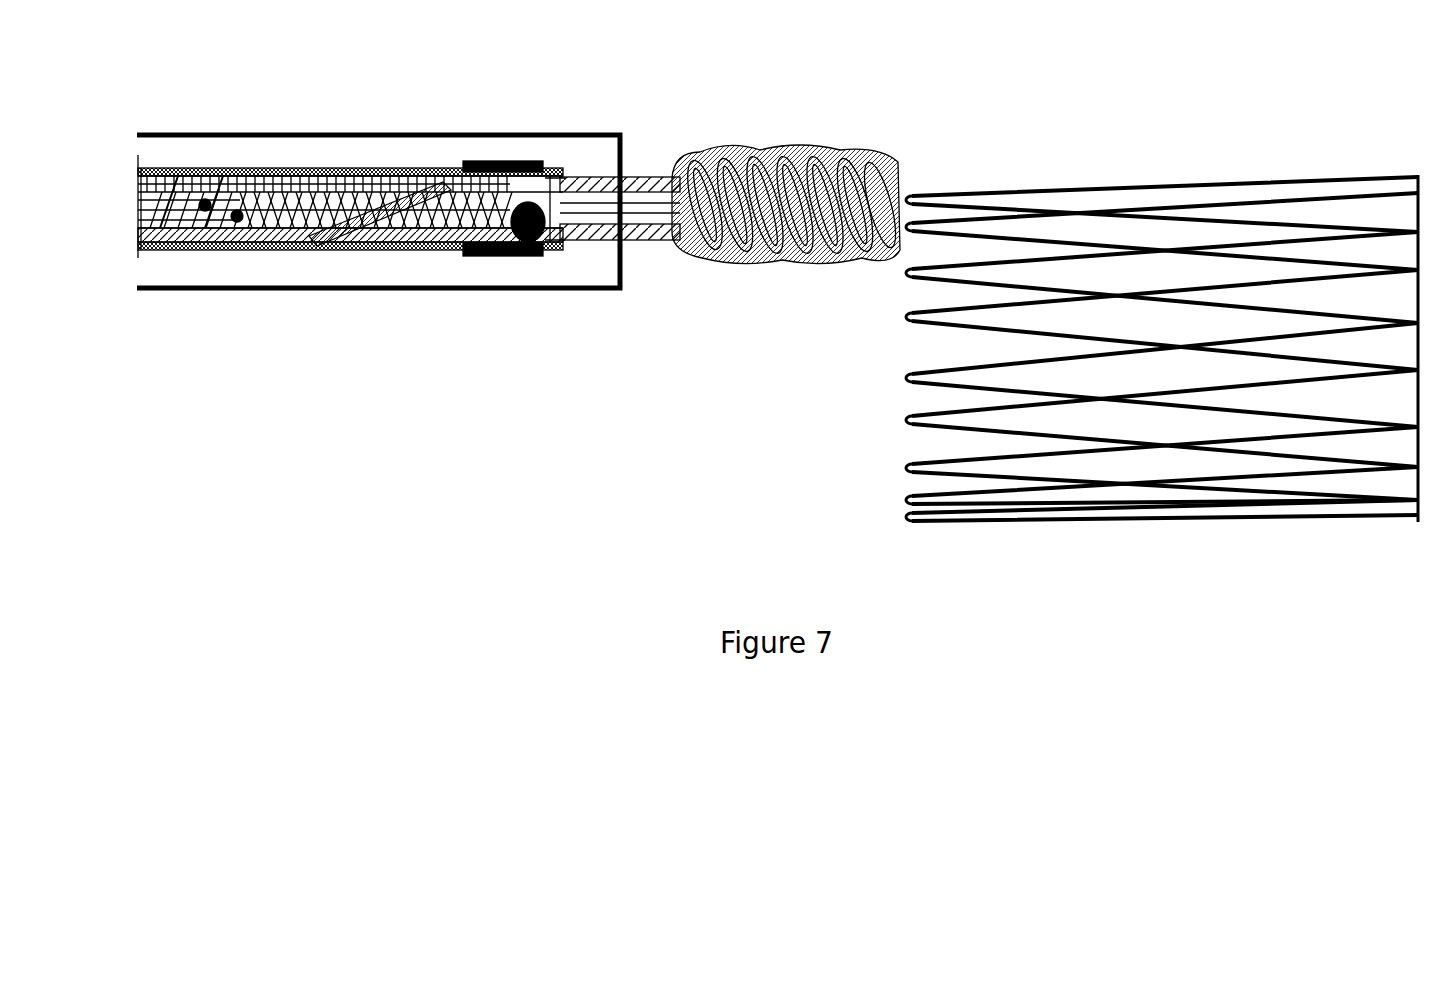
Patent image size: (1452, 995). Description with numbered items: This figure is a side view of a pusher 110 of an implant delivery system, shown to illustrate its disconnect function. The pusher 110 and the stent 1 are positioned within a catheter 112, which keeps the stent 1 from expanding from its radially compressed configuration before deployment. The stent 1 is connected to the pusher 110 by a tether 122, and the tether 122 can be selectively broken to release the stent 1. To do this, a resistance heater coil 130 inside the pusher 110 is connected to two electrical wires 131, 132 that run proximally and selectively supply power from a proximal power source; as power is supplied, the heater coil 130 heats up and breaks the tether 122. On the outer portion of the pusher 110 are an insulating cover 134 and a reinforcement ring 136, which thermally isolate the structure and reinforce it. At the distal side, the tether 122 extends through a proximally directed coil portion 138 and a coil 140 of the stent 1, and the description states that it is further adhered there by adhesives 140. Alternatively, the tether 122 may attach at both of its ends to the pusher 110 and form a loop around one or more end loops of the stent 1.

The stent 1 is at (1215, 178).
The pusher 110 is at (262, 170).
The catheter 112 is at (413, 290).
The tether 122 is at (405, 172).
The resistance heater coil 130 is at (547, 178).
The electrical wire 131 is at (193, 248).
The electrical wire 132 is at (330, 248).
The insulating cover 134 is at (178, 168).
The reinforcement ring 136 is at (497, 255).
The proximally directed coil portion 138 is at (630, 175).
The coil 140 is at (873, 263).